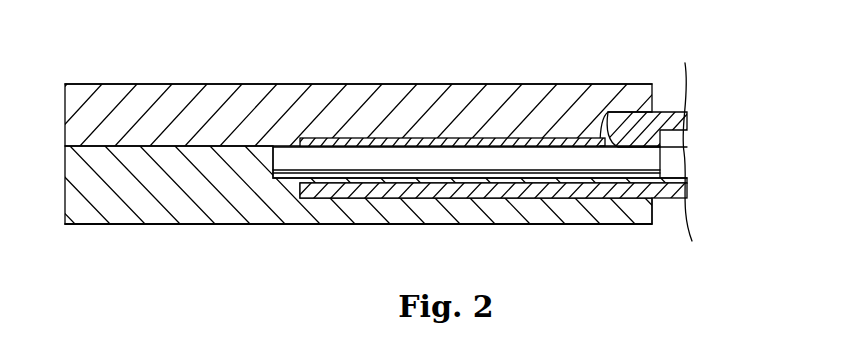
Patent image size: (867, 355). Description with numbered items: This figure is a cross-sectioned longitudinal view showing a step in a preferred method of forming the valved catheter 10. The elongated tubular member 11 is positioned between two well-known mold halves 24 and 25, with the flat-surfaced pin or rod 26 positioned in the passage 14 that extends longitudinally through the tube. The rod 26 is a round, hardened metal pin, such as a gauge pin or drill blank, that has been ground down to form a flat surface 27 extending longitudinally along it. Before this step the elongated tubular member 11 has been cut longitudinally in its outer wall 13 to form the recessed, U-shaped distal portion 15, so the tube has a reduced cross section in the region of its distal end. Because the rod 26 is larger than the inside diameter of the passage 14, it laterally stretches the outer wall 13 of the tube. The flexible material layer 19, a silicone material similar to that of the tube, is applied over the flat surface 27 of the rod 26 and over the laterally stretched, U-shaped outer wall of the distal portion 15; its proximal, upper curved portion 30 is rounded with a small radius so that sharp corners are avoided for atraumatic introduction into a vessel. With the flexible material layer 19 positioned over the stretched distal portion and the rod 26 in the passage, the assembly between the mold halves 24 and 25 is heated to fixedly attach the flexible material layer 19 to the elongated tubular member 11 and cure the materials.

The valved catheter 10 is at (357, 80).
The elongated tubular member 11 is at (658, 113).
The outer wall 13 is at (525, 195).
The passage 14 is at (673, 150).
The U-shaped distal portion 15 is at (342, 231).
The flexible material layer 19 is at (436, 141).
The mold half 24 is at (178, 88).
The mold half 25 is at (198, 224).
The flat-surfaced rod 26 is at (655, 162).
The flat surface 27 is at (645, 146).
The upper curved portion 30 is at (605, 121).